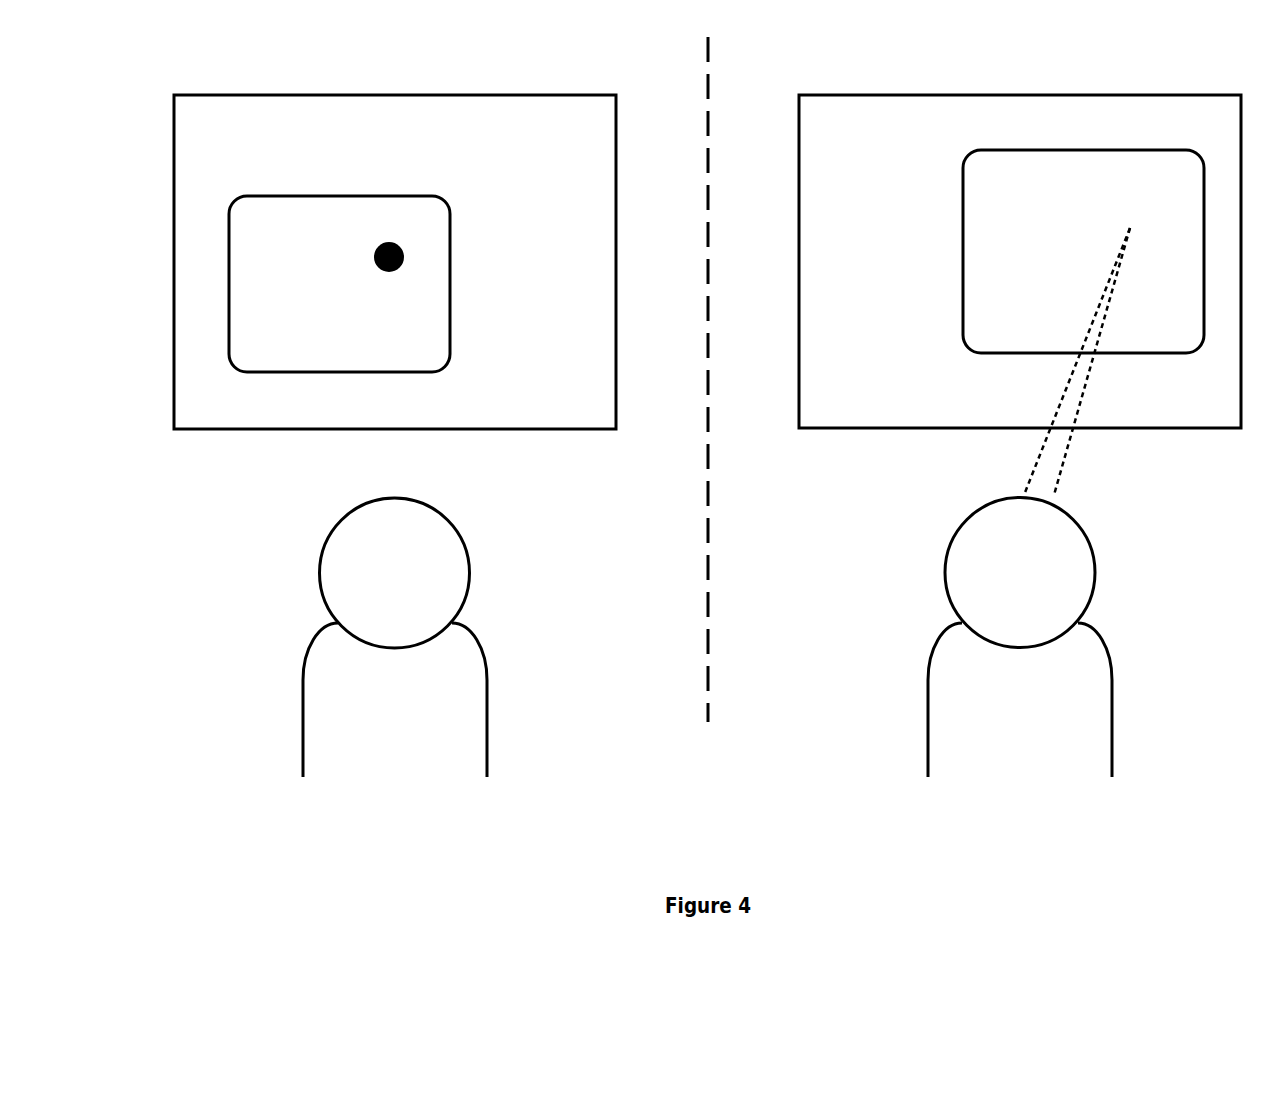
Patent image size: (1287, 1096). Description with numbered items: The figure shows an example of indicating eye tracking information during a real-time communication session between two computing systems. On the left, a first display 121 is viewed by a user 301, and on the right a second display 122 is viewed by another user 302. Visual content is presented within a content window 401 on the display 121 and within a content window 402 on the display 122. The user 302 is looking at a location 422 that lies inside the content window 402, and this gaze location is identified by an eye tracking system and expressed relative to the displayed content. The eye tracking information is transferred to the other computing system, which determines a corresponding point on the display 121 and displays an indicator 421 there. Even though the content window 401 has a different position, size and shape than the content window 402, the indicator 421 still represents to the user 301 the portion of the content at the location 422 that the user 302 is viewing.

The display 121 is at (215, 95).
The display 122 is at (848, 77).
The user 301 is at (323, 626).
The user 302 is at (948, 626).
The content window 401 is at (275, 176).
The content window 402 is at (1013, 136).
The indicator 421 is at (395, 226).
The location 422 is at (1143, 207).